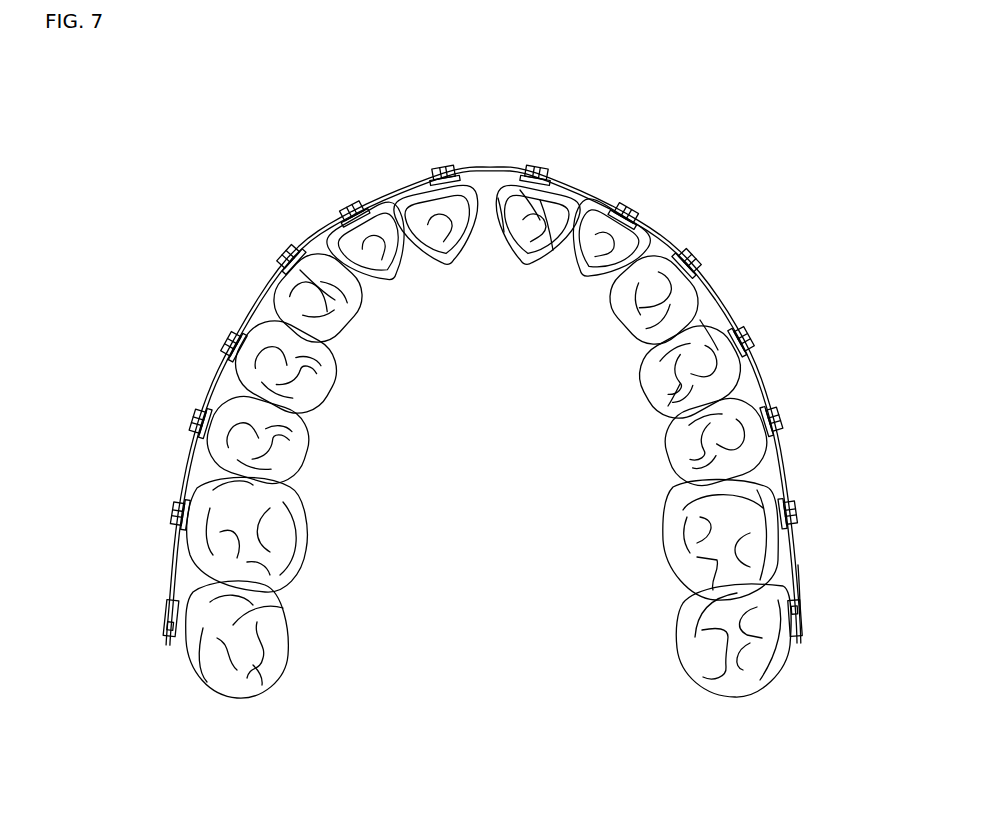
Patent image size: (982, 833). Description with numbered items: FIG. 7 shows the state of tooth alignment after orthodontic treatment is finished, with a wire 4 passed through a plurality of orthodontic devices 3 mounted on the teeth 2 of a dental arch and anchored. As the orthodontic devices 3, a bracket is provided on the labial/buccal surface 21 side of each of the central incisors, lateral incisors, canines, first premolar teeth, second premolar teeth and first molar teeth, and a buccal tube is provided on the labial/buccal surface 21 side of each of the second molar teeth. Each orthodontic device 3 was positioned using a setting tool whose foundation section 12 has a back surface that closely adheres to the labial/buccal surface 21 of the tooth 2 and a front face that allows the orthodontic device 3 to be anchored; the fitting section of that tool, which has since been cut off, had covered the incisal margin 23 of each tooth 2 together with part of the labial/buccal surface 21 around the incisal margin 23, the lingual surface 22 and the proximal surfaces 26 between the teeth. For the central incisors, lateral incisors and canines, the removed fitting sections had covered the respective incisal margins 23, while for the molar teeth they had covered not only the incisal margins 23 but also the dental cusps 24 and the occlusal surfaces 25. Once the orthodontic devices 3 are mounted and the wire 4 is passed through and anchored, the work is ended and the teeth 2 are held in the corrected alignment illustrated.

The tooth 2 is at (263, 286).
The orthodontic device 3 is at (283, 257).
The wire 4 is at (803, 567).
The foundation section 12 is at (323, 229).
The labial/buccal surface 21 is at (503, 228).
The lingual surface 22 is at (553, 220).
The incisal margin 23 is at (303, 273).
The dental cusp 24 is at (700, 367).
The occlusal surface 25 is at (682, 380).
The proximal surfaces 26 is at (363, 272).